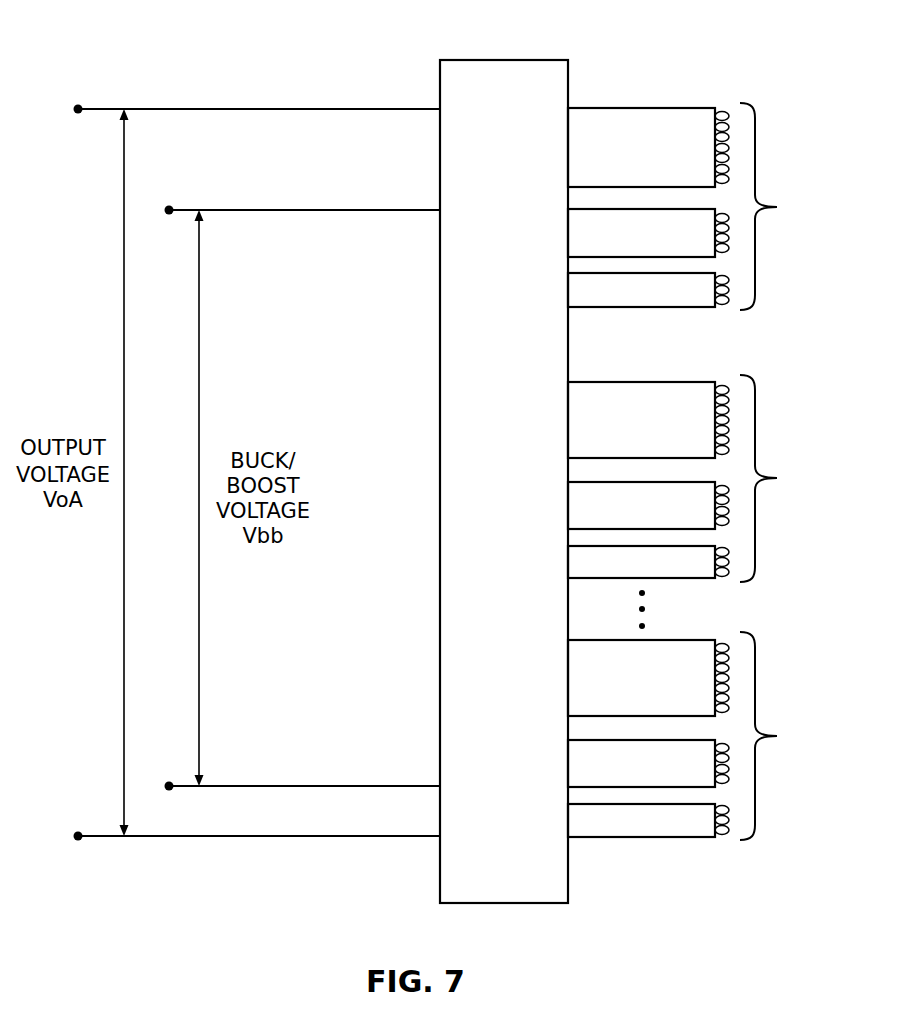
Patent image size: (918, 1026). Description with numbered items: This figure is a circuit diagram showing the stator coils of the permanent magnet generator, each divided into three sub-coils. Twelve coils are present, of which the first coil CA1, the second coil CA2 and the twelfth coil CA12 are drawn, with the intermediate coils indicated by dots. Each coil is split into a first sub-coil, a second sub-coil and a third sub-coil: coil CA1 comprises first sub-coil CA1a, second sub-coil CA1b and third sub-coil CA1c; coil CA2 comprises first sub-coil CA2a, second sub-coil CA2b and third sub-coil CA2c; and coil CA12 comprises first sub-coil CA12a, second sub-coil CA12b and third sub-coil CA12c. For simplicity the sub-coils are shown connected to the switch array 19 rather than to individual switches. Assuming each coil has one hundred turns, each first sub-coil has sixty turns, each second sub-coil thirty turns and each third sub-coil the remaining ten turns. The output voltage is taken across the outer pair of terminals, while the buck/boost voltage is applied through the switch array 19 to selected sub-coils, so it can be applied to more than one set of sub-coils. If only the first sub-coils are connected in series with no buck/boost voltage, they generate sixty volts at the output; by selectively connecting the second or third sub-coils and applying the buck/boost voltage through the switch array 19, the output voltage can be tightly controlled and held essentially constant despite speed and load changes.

The switch array 19 is at (500, 60).
The coil CA1 is at (782, 206).
The first sub-coil CA1a is at (648, 147).
The second sub-coil CA1b is at (648, 233).
The third sub-coil CA1c is at (648, 290).
The coil CA2 is at (782, 478).
The first sub-coil CA2a is at (648, 420).
The second sub-coil CA2b is at (648, 505).
The third sub-coil CA2c is at (648, 562).
The coil CA12 is at (789, 736).
The first sub-coil CA12a is at (648, 678).
The second sub-coil CA12b is at (648, 763).
The third sub-coil CA12c is at (648, 820).